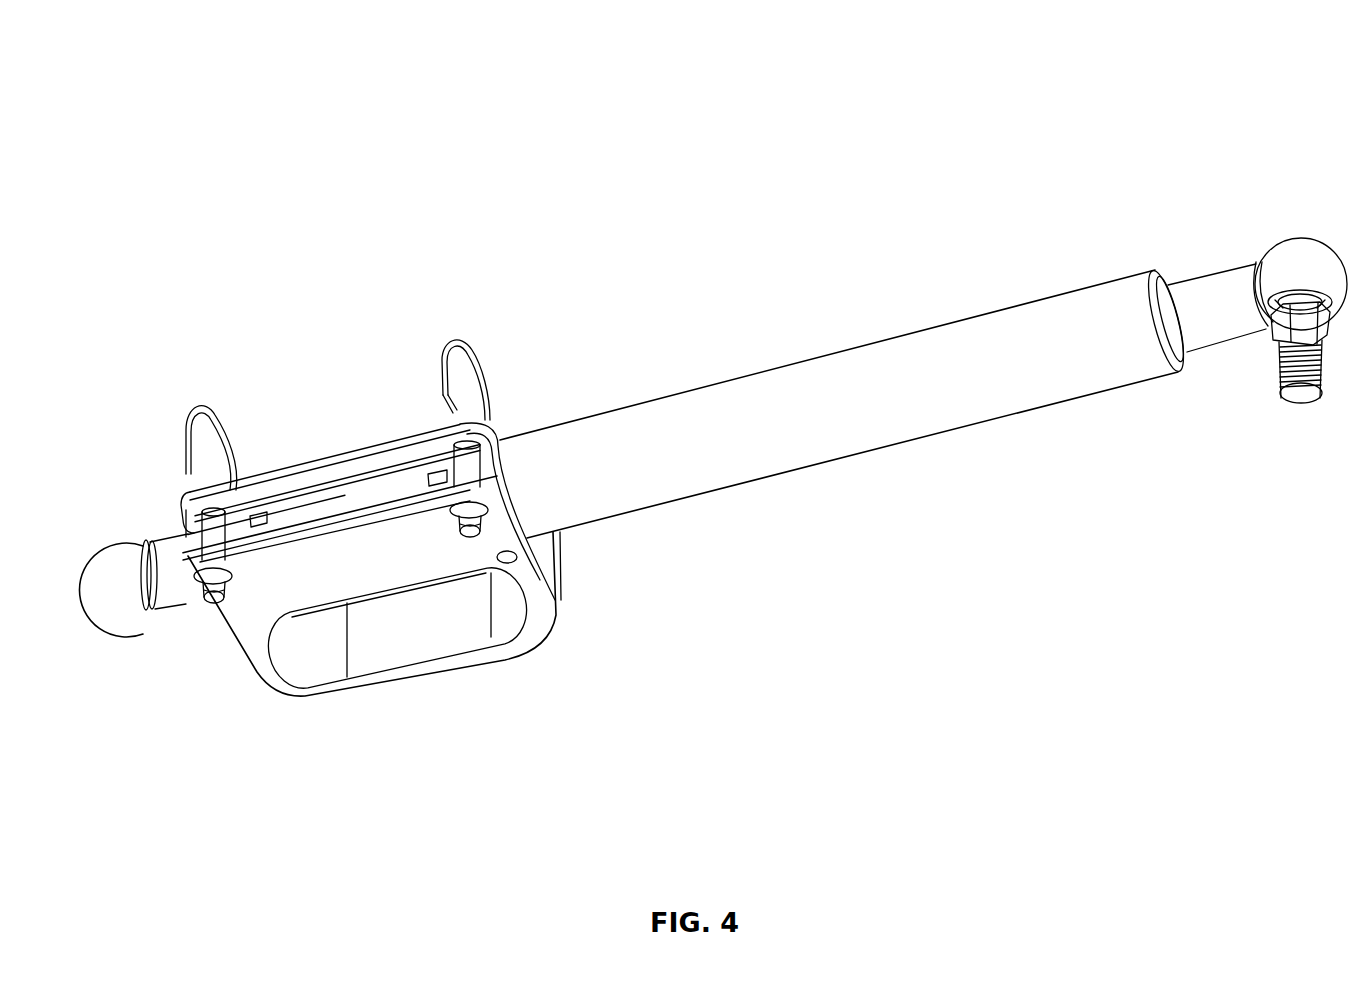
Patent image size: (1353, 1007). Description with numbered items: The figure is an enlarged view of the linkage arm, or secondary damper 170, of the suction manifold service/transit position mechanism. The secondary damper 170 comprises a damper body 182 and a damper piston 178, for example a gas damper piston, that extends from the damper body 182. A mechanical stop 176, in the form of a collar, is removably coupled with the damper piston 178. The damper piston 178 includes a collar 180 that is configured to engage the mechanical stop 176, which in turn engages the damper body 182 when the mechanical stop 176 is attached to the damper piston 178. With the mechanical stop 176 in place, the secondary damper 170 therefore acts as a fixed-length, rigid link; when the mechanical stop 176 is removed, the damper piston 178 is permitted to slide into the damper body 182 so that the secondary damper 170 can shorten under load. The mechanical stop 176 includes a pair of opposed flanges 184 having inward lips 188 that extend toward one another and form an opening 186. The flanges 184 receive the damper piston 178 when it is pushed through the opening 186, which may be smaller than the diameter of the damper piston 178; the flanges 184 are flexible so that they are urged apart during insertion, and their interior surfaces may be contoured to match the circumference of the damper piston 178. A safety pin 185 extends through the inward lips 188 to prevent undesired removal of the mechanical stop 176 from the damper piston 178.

The secondary damper 170 is at (966, 158).
The mechanical stop 176 is at (555, 625).
The damper piston 178 is at (340, 500).
The collar 180 is at (182, 608).
The damper body 182 is at (958, 318).
The opposed flanges 184 is at (267, 468).
The safety pin 185 is at (212, 400).
The opening 186 is at (283, 505).
The inward lips 188 is at (488, 428).